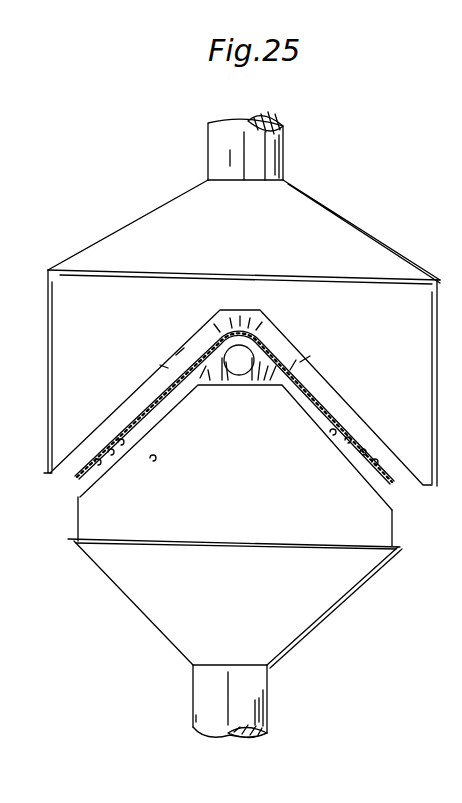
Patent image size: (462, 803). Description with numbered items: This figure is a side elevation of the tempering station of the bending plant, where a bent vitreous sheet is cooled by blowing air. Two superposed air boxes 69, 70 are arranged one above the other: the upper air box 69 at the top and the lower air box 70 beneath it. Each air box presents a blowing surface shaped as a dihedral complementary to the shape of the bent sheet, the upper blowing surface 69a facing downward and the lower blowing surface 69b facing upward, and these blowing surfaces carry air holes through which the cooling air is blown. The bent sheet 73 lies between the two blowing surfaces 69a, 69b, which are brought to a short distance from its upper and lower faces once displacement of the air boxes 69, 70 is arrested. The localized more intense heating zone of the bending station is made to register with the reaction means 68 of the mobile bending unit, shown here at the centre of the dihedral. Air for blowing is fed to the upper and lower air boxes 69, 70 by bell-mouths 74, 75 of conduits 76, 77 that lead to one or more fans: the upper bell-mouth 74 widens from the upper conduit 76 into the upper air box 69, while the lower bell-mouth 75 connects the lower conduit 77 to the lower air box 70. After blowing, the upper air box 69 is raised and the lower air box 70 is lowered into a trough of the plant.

The reaction means 68 is at (237, 376).
The upper air box 69 is at (62, 291).
The blowing surface 69a is at (140, 399).
The blowing surface 69b is at (332, 436).
The lower air box 70 is at (90, 517).
The bent sheet 73 is at (130, 432).
The bell-mouth 74 is at (313, 228).
The bell-mouth 75 is at (328, 596).
The conduit 76 is at (284, 152).
The conduit 77 is at (258, 694).